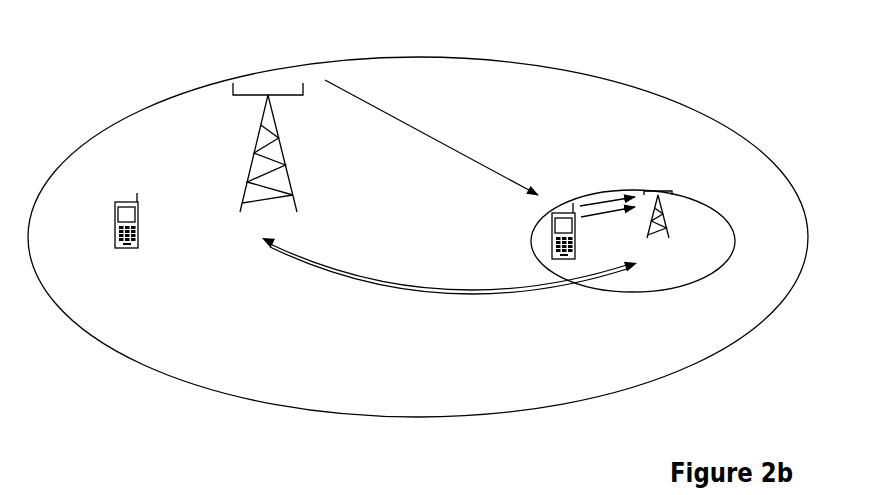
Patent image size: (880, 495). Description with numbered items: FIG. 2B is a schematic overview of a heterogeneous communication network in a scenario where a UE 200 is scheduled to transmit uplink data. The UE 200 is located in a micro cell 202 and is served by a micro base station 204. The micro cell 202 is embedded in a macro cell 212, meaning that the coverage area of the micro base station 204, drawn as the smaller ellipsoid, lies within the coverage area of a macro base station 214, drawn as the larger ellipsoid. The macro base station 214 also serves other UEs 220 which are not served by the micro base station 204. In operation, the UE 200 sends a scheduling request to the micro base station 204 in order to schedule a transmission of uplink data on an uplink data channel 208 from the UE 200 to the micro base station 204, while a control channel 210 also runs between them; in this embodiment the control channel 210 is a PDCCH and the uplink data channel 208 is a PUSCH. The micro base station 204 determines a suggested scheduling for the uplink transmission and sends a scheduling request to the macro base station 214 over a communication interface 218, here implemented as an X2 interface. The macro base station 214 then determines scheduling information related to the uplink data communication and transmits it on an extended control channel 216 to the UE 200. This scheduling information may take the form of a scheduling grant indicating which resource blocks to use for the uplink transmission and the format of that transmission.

The UE 200 is at (537, 240).
The micro cell 202 is at (678, 229).
The micro base station 204 is at (675, 207).
The uplink data channel 208 is at (602, 193).
The control channel 210 is at (613, 205).
The macro cell 212 is at (418, 237).
The macro base station 214 is at (222, 192).
The extended control channel 216 is at (378, 82).
The communication interface 218 is at (382, 303).
The other UEs 220 is at (100, 230).